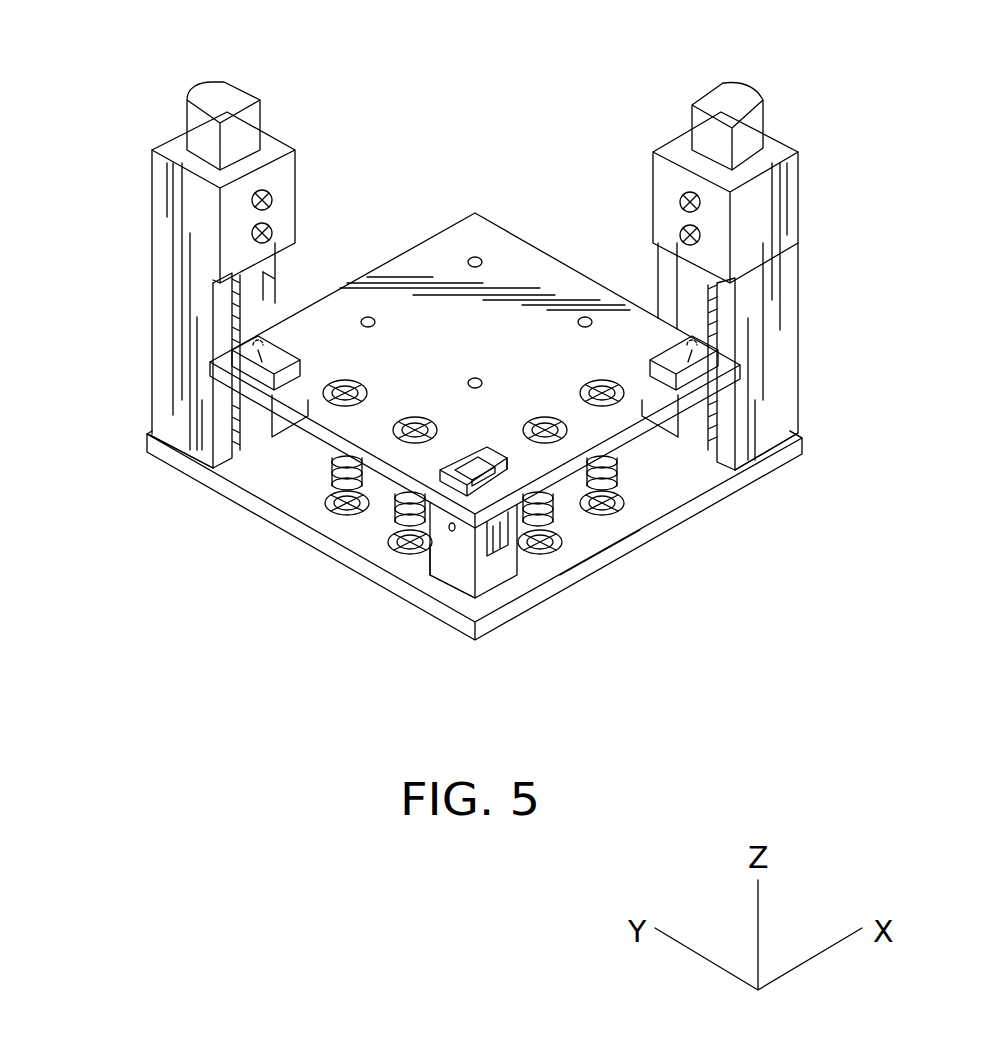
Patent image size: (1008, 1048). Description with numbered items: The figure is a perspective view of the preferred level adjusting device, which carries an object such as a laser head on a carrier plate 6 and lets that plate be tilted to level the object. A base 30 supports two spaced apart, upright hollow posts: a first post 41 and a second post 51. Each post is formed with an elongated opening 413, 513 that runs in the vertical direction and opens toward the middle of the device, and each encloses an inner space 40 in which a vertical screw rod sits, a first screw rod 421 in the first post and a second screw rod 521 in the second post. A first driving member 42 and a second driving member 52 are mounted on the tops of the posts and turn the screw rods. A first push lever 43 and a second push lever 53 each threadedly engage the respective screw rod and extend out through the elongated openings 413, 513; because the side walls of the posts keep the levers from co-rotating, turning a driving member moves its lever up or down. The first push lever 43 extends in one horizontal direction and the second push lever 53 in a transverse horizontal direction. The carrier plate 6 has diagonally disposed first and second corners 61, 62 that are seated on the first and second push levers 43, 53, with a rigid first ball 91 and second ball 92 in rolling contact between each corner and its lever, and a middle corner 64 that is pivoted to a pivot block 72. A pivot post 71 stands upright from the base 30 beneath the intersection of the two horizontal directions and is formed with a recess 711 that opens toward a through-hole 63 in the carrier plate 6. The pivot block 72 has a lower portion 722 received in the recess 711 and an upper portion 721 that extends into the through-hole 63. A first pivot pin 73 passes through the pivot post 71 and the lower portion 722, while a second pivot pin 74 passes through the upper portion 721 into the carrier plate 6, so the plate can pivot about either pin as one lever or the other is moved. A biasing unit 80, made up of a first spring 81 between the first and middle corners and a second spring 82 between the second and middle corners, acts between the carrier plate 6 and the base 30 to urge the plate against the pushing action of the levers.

The carrier plate 6 is at (460, 210).
The base 30 is at (650, 540).
The inner space 40 is at (723, 275).
The first post 41 is at (798, 215).
The first driving member 42 is at (758, 122).
The first push lever 43 is at (688, 313).
The second post 51 is at (150, 252).
The second driving member 52 is at (187, 115).
The second push lever 53 is at (222, 314).
The first corner 61 is at (740, 347).
The second corner 62 is at (210, 372).
The through-hole 63 is at (494, 455).
The middle corner 64 is at (432, 553).
The pivot post 71 is at (487, 597).
The pivot block 72 is at (440, 500).
The first pivot pin 73 is at (432, 562).
The second pivot pin 74 is at (600, 565).
The biasing unit 80 is at (318, 463).
The first spring 81 is at (625, 470).
The second spring 82 is at (320, 482).
The first ball 91 is at (740, 432).
The second ball 92 is at (205, 442).
The elongated opening 413 is at (707, 335).
The first screw rod 421 is at (717, 310).
The elongated opening 513 is at (276, 262).
The second screw rod 521 is at (262, 278).
The recess 711 is at (452, 531).
The upper portion 721 is at (467, 465).
The lower portion 722 is at (503, 548).